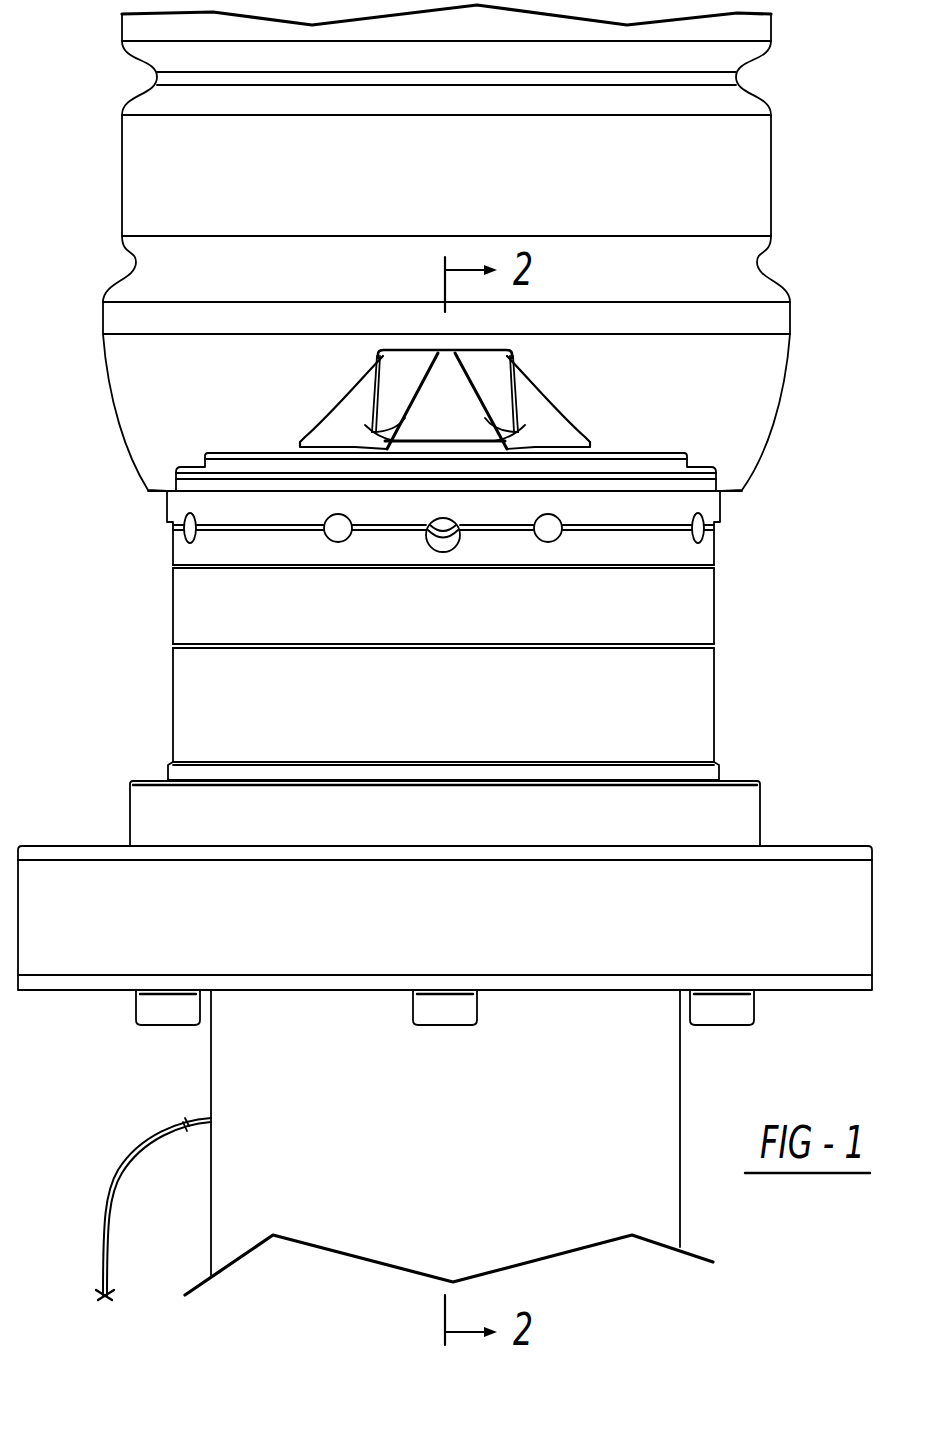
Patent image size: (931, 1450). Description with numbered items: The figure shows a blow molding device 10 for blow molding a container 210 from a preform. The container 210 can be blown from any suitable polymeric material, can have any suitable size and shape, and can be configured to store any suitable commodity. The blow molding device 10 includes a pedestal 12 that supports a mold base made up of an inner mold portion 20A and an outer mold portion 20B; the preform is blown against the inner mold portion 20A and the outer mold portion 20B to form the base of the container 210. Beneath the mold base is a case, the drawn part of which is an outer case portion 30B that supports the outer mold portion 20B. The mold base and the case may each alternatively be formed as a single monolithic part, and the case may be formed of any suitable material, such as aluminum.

The blow molding device 10 is at (430, 613).
The pedestal 12 is at (150, 645).
The inner mold portion 20A is at (538, 392).
The outer mold portion 20B is at (720, 508).
The outer case portion 30B is at (720, 607).
The container 210 is at (122, 160).